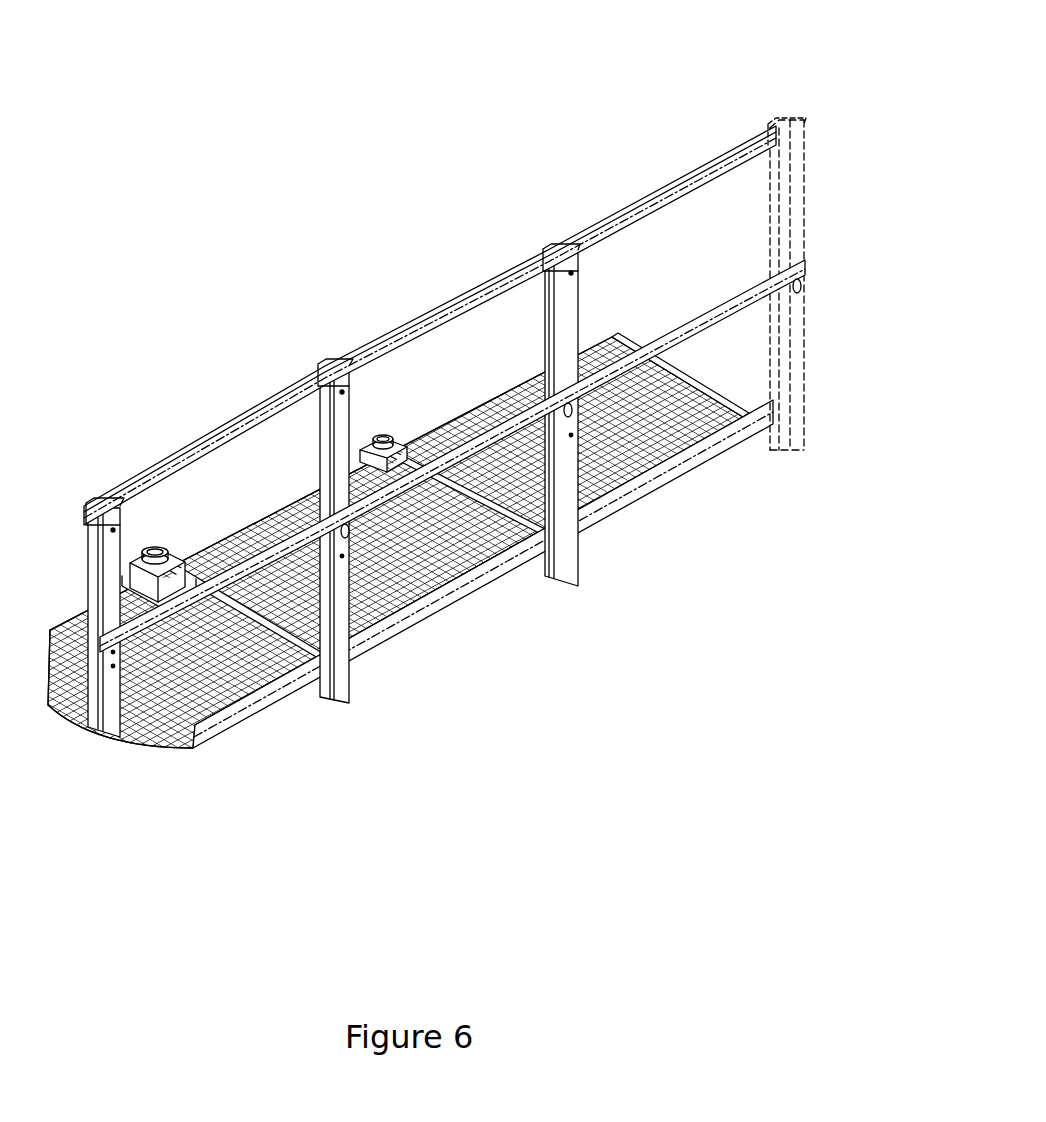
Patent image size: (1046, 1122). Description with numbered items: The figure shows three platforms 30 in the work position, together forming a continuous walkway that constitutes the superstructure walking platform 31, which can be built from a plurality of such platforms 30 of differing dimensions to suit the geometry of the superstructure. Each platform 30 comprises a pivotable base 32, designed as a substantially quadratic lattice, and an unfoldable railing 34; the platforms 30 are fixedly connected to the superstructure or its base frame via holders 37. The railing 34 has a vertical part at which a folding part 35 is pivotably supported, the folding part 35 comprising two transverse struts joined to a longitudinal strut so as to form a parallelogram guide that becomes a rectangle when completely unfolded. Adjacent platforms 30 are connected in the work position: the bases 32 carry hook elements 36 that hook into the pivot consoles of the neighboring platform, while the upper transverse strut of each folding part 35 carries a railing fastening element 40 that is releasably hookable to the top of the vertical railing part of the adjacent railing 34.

The platform 30 is at (300, 800).
The superstructure walking platform 31 is at (186, 98).
The base 32 is at (220, 540).
The railing 34 is at (353, 678).
The folding part 35 is at (203, 438).
The hook element 36 is at (395, 298).
The holder 37 is at (386, 432).
The railing fastening element 40 is at (318, 372).